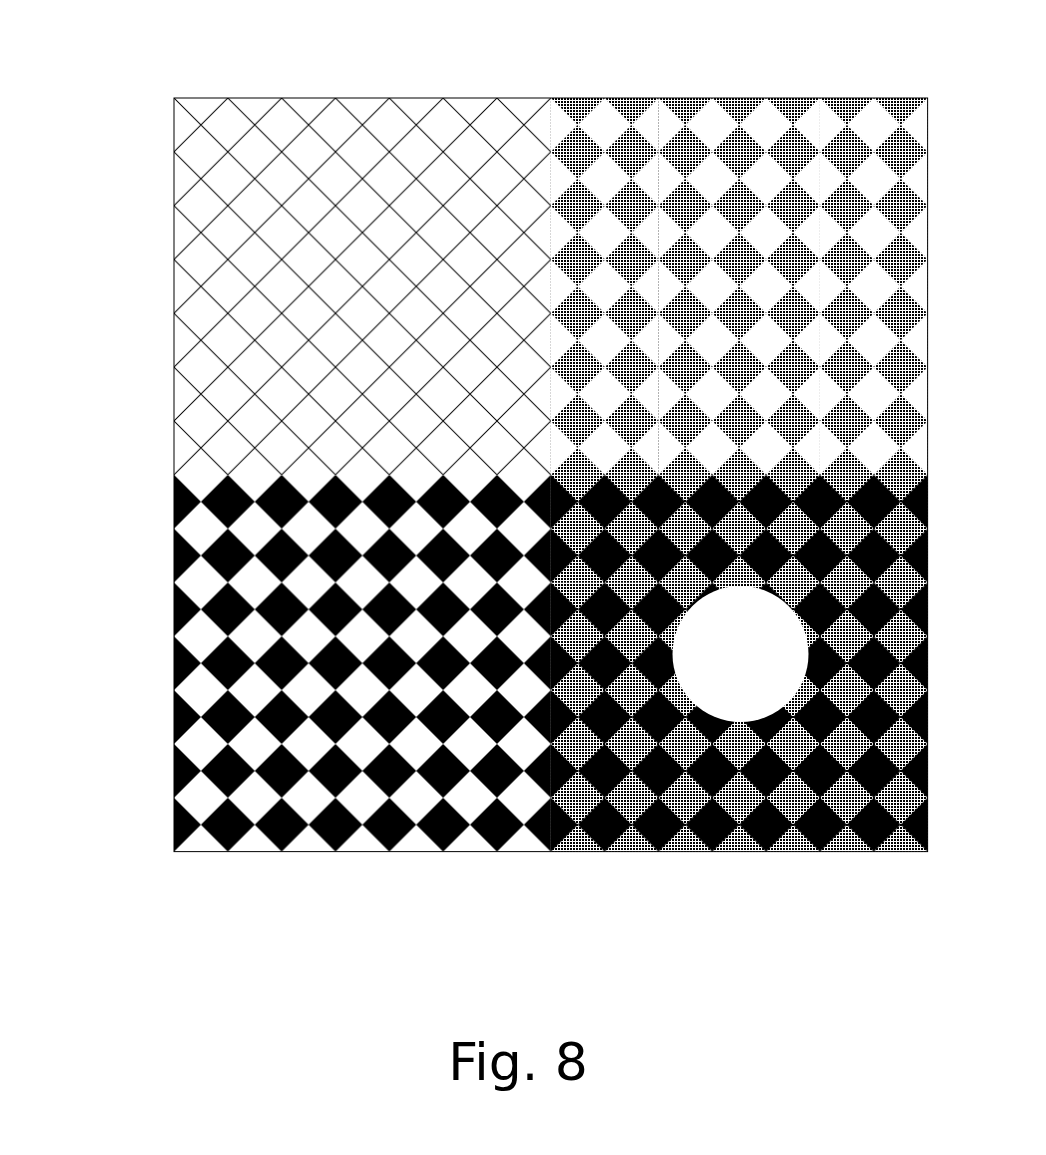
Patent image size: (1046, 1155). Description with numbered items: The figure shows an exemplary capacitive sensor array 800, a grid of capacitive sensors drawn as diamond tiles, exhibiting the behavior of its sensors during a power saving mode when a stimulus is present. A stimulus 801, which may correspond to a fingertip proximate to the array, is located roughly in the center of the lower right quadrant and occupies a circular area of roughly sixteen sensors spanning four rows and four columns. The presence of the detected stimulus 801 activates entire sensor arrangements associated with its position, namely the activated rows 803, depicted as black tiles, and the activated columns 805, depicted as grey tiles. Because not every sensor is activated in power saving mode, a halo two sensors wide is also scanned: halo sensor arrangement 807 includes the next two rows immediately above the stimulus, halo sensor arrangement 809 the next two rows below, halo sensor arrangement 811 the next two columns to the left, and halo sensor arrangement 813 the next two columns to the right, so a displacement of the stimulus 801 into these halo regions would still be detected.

The capacitive sensor array 800 is at (494, 472).
The stimulus 801 is at (719, 654).
The activated rows 803 is at (147, 582).
The activated columns 805 is at (658, 59).
The halo sensor arrangement 807 is at (174, 582).
The halo sensor arrangement 809 is at (174, 744).
The halo sensor arrangement 811 is at (551, 87).
The halo sensor arrangement 813 is at (820, 87).